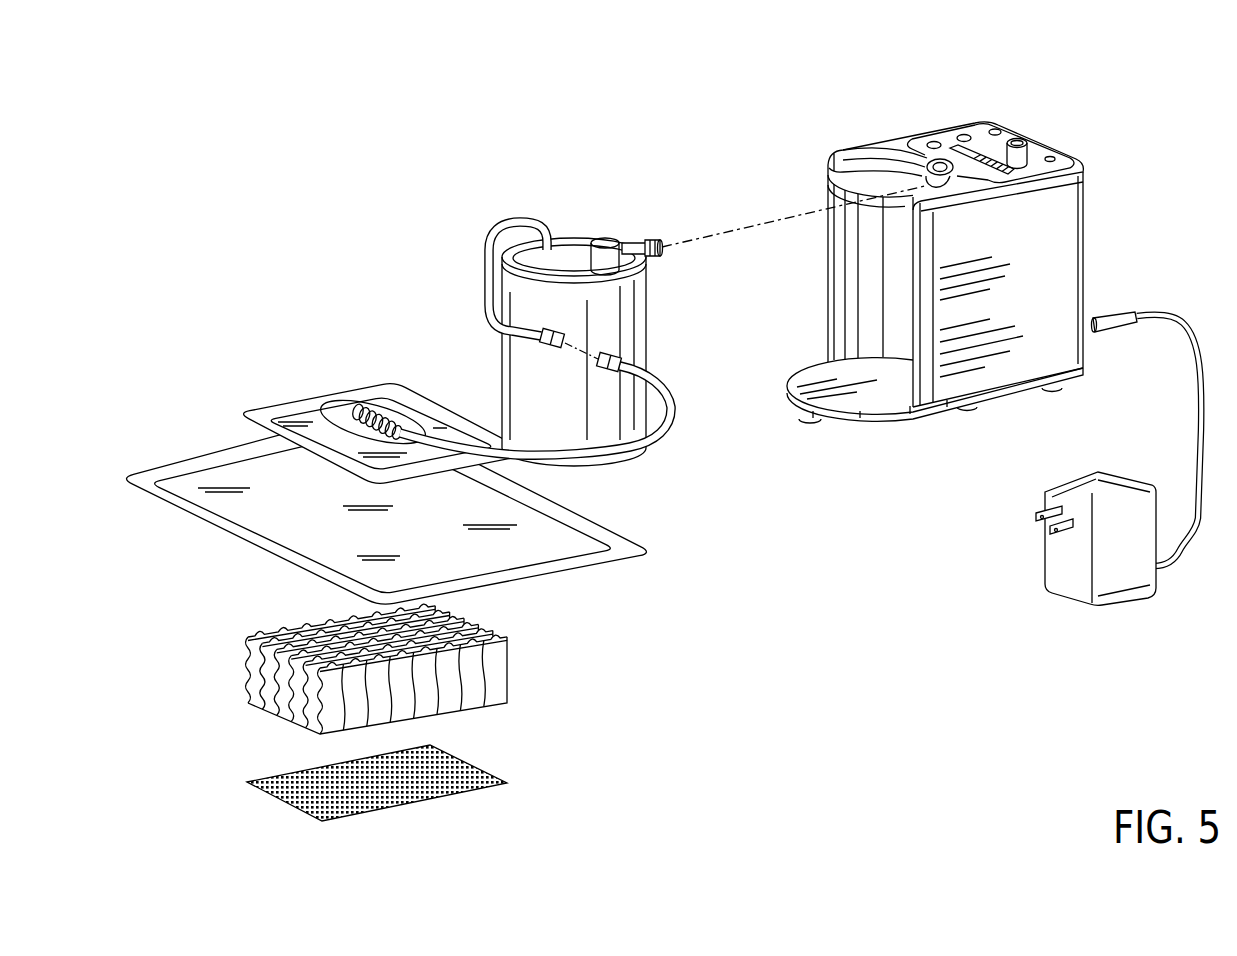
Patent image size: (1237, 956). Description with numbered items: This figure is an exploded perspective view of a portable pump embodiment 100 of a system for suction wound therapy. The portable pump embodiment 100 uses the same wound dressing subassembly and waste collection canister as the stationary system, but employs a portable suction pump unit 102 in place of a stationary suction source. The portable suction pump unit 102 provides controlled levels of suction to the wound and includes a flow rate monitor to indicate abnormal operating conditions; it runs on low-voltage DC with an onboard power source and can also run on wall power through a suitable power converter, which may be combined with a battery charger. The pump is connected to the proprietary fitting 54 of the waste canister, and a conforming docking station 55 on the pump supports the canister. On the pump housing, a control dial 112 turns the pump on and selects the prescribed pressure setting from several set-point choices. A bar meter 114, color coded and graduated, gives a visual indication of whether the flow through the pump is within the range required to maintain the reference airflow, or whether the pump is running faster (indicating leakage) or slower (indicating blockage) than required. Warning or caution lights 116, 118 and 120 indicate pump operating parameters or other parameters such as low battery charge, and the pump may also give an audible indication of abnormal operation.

The portable pump embodiment 100 is at (664, 453).
The portable suction pump unit 102 is at (951, 254).
The proprietary fitting 54 is at (647, 240).
The conforming docking station 55 is at (810, 372).
The control dial 112 is at (1030, 152).
The bar meter 114 is at (985, 152).
The warning or caution light 116 is at (999, 129).
The warning or caution light 118 is at (930, 142).
The button 120 is at (962, 134).